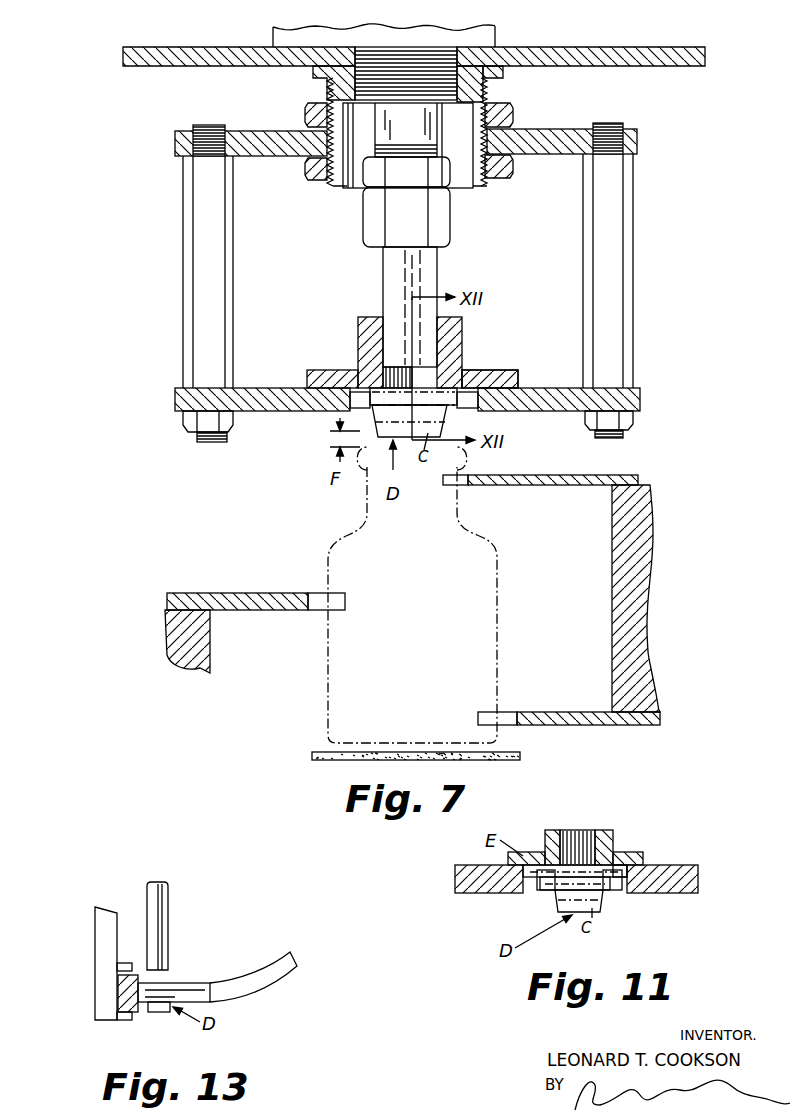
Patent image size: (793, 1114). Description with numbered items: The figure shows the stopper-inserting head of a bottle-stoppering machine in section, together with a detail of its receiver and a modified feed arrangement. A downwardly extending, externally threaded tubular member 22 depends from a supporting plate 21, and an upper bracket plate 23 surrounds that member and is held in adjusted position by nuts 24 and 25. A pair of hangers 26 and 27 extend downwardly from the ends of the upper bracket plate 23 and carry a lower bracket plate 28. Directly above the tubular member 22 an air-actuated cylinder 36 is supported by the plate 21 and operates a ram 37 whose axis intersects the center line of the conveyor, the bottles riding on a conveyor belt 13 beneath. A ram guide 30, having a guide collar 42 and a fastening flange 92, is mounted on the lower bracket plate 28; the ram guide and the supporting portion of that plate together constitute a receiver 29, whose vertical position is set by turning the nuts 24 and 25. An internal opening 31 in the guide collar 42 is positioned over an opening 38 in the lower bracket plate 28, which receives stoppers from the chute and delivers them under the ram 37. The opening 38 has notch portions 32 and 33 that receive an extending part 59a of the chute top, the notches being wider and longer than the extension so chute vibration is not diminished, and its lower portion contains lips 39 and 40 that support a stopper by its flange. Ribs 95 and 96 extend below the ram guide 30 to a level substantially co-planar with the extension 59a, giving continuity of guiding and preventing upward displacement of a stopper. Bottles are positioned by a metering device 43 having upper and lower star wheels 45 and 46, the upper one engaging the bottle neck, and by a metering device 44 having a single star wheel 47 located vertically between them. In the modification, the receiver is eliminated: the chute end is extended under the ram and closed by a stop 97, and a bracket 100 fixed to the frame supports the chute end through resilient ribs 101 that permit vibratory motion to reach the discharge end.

In FIG. 7, the supporting plate 21 is at (186, 50).
In FIG. 7, the pressure fluid actuated cylinder 36 is at (548, 46).
In FIG. 7, the tubular member 22 is at (497, 96).
In FIG. 7, the nut 24 is at (512, 116).
In FIG. 7, the nut 25 is at (512, 170).
In FIG. 7, the upper bracket plate 23 is at (274, 158).
In FIG. 7, the hanger 27 is at (188, 191).
In FIG. 7, the hanger 26 is at (628, 212).
In FIG. 7, the ram 37 is at (392, 275).
In FIG. 13, the ram 37 is at (170, 918).
In FIG. 7, the ram guide 30 is at (357, 330).
In FIG. 7, the guide collar 42 is at (447, 345).
In FIG. 7, the fastening flange 92 is at (306, 372).
In FIG. 11, the fastening flange 92 is at (548, 832).
In FIG. 7, the internal opening 31 is at (443, 385).
In FIG. 7, the receiver 29 is at (515, 357).
In FIG. 7, the lower bracket plate 28 is at (263, 413).
In FIG. 11, the lower bracket plate 28 is at (690, 866).
In FIG. 7, the opening 38 is at (376, 392).
In FIG. 11, the opening 38 is at (603, 902).
In FIG. 7, the rib 95 is at (352, 406).
In FIG. 7, the rib 96 is at (478, 404).
In FIG. 7, the conveyor belt 13 is at (512, 753).
In FIG. 7, the metering device 44 is at (230, 592).
In FIG. 7, the star wheel 47 is at (255, 612).
In FIG. 7, the upper star wheel 45 is at (522, 487).
In FIG. 7, the metering device 43 is at (540, 476).
In FIG. 7, the lower star wheel 46 is at (537, 711).
In FIG. 11, the extending part of top element 59a is at (620, 853).
In FIG. 11, the notch portion 33 is at (540, 878).
In FIG. 11, the lip 40 is at (548, 890).
In FIG. 11, the lip 39 is at (610, 890).
In FIG. 11, the notch portion 32 is at (622, 875).
In FIG. 13, the rib 101 is at (127, 977).
In FIG. 13, the bracket 100 is at (103, 1005).
In FIG. 13, the stop 97 is at (150, 1005).